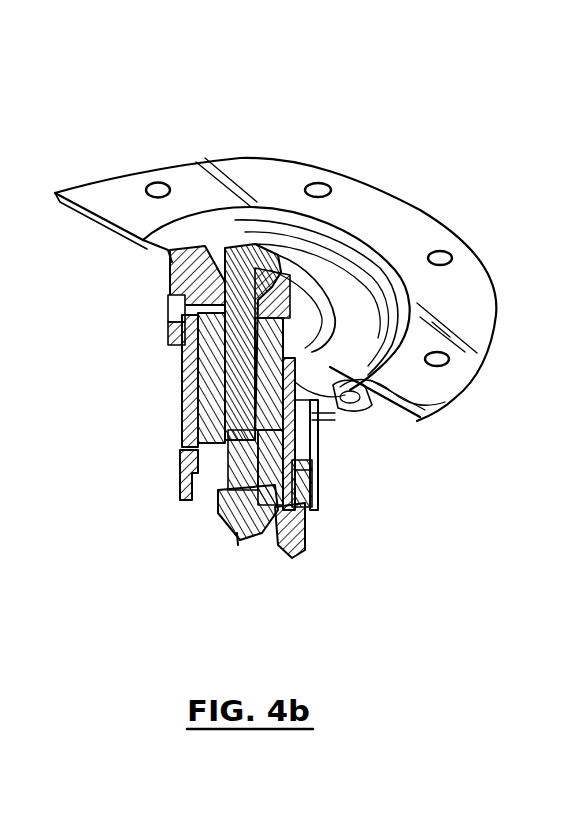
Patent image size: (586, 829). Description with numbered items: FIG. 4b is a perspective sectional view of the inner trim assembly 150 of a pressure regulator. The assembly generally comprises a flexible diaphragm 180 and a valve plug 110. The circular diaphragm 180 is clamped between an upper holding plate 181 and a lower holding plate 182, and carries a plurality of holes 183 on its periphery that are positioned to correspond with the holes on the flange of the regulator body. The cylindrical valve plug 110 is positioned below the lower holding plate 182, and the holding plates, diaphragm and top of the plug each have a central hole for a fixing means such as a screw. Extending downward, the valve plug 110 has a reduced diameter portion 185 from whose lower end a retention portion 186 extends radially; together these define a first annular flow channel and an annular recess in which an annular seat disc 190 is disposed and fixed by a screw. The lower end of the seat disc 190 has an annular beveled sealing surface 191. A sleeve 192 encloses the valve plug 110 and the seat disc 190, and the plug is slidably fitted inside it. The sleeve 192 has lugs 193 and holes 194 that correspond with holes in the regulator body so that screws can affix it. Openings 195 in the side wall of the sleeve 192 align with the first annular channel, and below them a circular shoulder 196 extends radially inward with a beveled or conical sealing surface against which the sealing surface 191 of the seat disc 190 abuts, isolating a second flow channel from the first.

The inner trim assembly 150 is at (332, 130).
The flexible diaphragm 180 is at (420, 217).
The upper holding plate 181 is at (293, 258).
The lower holding plate 182 is at (178, 297).
The holes 183 is at (447, 253).
The sleeve 192 is at (187, 370).
The lugs 193 is at (455, 400).
The holes 194 is at (410, 413).
The valve plug 110 is at (300, 445).
The reduced diameter portion 185 is at (305, 478).
The openings 195 is at (318, 480).
The retention portion 186 is at (305, 526).
The annular seat disc 190 is at (300, 533).
The circular shoulder 196 is at (300, 555).
The annular beveled sealing surface 191 is at (278, 535).